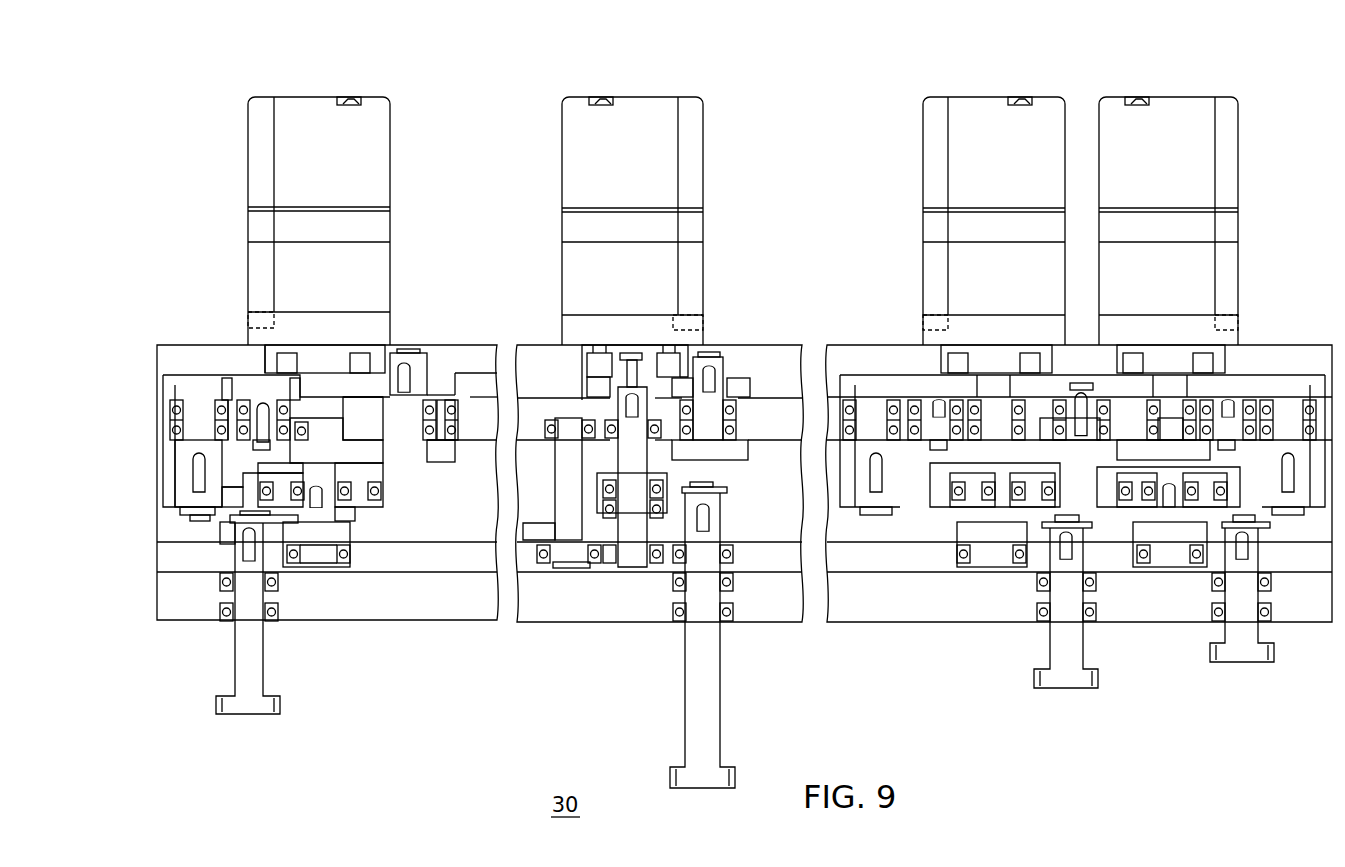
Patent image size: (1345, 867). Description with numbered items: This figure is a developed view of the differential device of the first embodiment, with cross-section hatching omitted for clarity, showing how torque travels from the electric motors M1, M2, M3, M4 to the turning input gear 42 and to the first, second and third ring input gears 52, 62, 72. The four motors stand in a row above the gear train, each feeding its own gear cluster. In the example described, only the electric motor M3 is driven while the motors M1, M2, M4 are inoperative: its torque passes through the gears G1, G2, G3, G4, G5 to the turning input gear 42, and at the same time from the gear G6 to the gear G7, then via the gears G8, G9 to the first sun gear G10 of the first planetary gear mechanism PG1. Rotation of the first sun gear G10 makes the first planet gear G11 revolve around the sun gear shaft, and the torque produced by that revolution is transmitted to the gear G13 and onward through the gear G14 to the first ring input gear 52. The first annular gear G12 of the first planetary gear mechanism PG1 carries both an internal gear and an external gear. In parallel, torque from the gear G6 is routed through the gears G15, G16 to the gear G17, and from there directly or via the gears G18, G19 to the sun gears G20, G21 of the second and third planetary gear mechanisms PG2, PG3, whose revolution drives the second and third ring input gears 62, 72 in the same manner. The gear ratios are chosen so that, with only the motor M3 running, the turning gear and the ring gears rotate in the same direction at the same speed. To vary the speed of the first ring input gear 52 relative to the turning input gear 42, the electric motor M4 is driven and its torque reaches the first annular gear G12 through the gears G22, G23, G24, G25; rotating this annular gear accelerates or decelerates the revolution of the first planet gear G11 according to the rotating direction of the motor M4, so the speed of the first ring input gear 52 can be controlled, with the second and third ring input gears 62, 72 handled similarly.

The electric motor M1 is at (1180, 105).
The electric motor M2 is at (980, 105).
The electric motor M3 is at (654, 105).
The electric motor M4 is at (317, 105).
The gear G1 is at (625, 530).
The gear G2 is at (542, 530).
The gear G3 is at (557, 500).
The gear G4 is at (663, 500).
The gear G5 is at (722, 500).
The gear G6 is at (600, 385).
The gear G7 is at (441, 388).
The gear G8 is at (440, 452).
The gear G9 is at (350, 445).
The first sun gear G10 is at (323, 495).
The first planet gear G11 is at (357, 500).
The first annular gear G12 is at (228, 488).
The gear G13 is at (288, 532).
The gear G14 is at (215, 528).
The gear G15 is at (737, 388).
The gear G16 is at (740, 452).
The gear G17 is at (940, 425).
The gear G18 is at (1043, 433).
The gear G19 is at (1235, 420).
The sun gear G20 is at (983, 495).
The sun gear G21 is at (1188, 495).
The gear G22 is at (318, 385).
The gear G23 is at (245, 390).
The gear G24 is at (248, 395).
The gear G25 is at (178, 498).
The first planetary gear mechanism PG1 is at (426, 522).
The second planetary gear mechanism PG2 is at (936, 524).
The third planetary gear mechanism PG3 is at (1176, 524).
The turning input gear 42 is at (704, 780).
The first ring input gear 52 is at (250, 703).
The second ring input gear 62 is at (1065, 680).
The third ring input gear 72 is at (1245, 655).